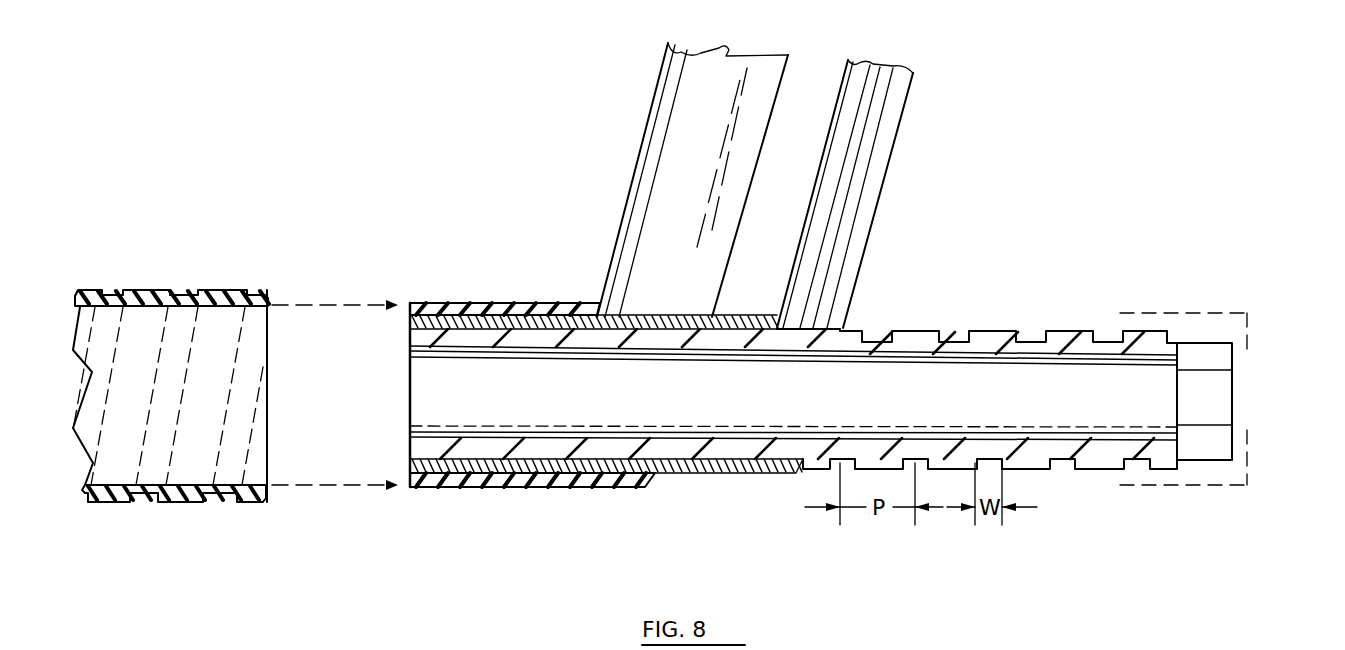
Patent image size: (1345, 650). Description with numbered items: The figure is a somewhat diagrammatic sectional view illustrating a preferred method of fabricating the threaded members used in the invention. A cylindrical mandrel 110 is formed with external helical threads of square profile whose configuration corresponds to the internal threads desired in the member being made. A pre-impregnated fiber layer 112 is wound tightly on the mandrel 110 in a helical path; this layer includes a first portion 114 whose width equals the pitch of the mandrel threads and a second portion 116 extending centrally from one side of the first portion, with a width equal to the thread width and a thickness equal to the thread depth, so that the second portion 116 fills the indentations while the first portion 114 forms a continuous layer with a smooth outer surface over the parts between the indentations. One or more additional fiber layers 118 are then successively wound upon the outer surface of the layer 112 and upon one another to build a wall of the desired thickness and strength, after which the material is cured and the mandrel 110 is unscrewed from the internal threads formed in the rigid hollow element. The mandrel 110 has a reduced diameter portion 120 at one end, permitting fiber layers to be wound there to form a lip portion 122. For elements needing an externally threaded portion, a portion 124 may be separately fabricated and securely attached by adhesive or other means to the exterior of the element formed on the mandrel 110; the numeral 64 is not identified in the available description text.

The threaded pipe end 64 is at (95, 282).
The externally threaded portion 124 is at (222, 330).
The additional fiber layers 118 is at (662, 98).
The pre-impregnated fiber layer 112 is at (900, 125).
The first portion 114 is at (741, 476).
The second portion 116 is at (771, 476).
The cylindrical mandrel 110 is at (1162, 378).
The reduced diameter portion 120 is at (1222, 403).
The lip portion 122 is at (1247, 472).